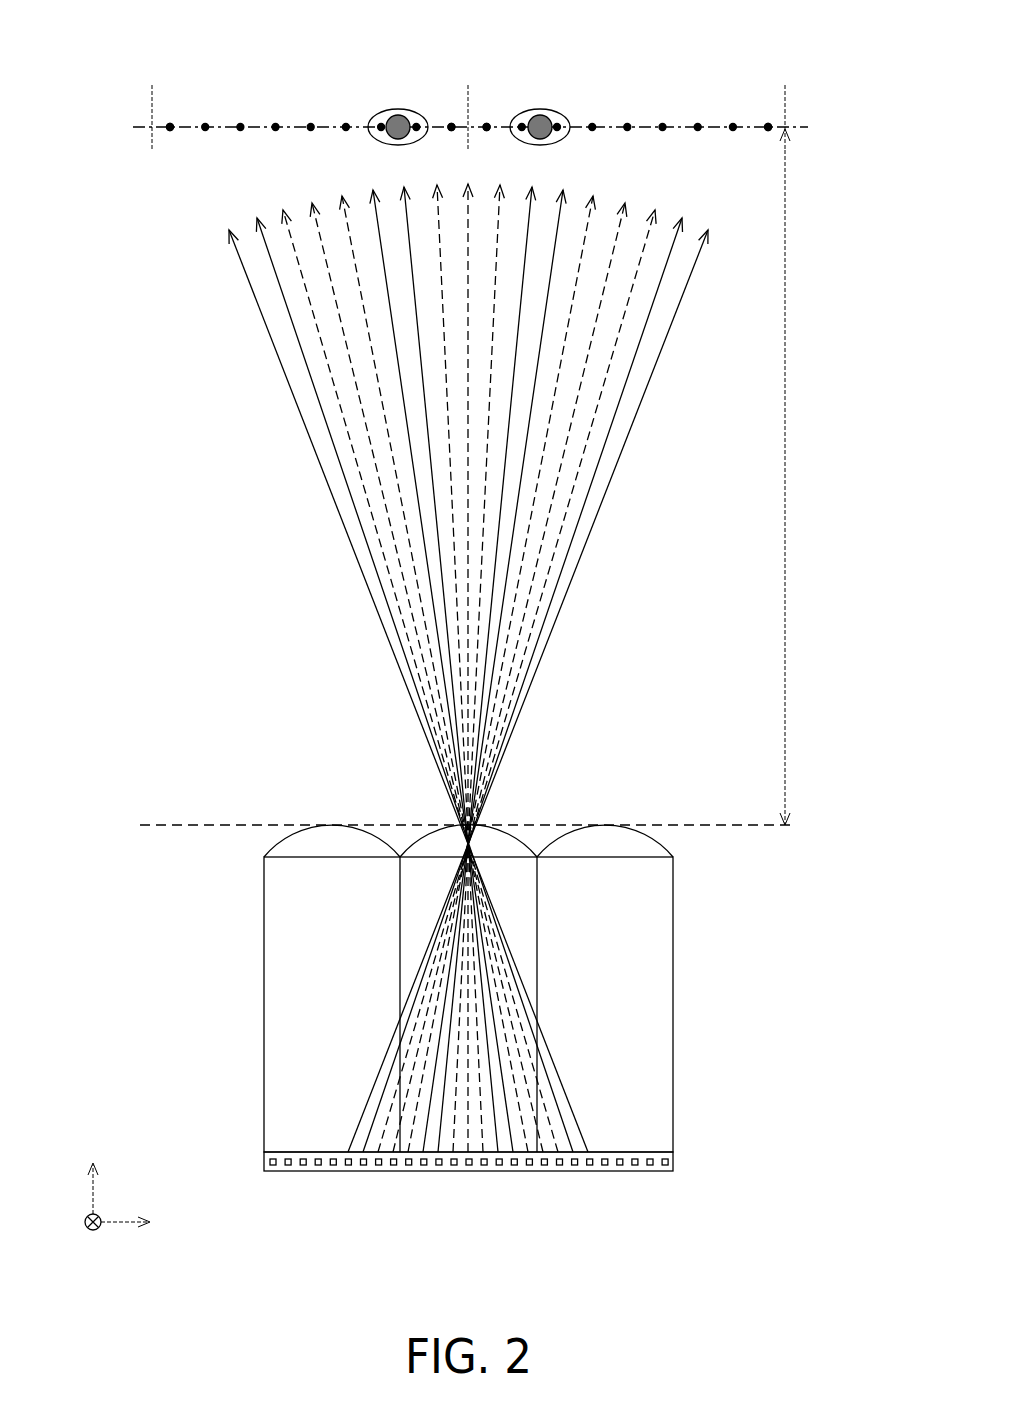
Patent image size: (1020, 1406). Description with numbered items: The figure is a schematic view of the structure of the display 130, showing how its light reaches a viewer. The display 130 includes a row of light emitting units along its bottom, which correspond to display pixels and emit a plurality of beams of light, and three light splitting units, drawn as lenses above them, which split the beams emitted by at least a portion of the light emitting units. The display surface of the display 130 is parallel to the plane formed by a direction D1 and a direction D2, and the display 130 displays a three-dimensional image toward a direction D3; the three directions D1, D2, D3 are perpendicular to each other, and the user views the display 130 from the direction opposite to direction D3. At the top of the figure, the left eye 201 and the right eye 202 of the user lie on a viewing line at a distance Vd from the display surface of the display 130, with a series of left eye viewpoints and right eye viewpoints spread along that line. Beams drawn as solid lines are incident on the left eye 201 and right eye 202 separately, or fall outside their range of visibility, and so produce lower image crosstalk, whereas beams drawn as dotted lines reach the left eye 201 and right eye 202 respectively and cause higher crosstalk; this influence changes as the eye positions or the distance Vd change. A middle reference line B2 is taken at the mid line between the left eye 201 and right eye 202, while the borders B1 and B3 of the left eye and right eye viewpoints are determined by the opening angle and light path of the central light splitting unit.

The display 130 is at (413, 958).
The left eye 201 is at (396, 109).
The right eye 202 is at (541, 109).
The border B1 is at (151, 102).
The middle reference line B2 is at (467, 102).
The border B3 is at (786, 102).
The distance Vd is at (787, 475).
The direction D1 is at (141, 1222).
The direction D2 is at (82, 1241).
The direction D3 is at (93, 1170).